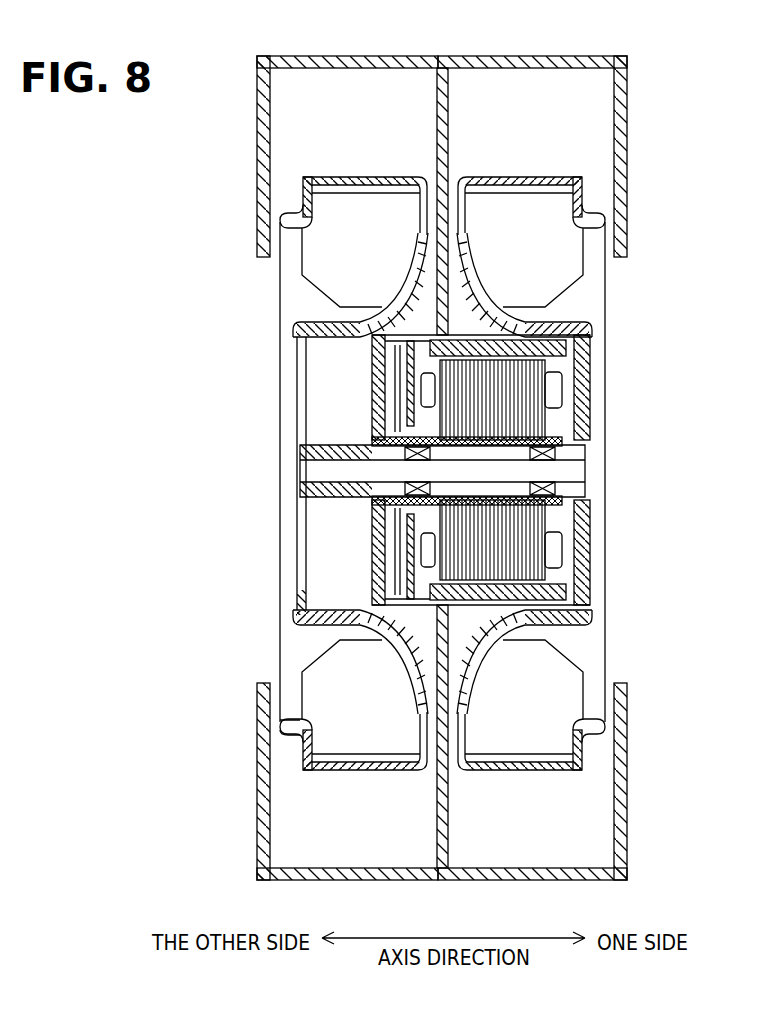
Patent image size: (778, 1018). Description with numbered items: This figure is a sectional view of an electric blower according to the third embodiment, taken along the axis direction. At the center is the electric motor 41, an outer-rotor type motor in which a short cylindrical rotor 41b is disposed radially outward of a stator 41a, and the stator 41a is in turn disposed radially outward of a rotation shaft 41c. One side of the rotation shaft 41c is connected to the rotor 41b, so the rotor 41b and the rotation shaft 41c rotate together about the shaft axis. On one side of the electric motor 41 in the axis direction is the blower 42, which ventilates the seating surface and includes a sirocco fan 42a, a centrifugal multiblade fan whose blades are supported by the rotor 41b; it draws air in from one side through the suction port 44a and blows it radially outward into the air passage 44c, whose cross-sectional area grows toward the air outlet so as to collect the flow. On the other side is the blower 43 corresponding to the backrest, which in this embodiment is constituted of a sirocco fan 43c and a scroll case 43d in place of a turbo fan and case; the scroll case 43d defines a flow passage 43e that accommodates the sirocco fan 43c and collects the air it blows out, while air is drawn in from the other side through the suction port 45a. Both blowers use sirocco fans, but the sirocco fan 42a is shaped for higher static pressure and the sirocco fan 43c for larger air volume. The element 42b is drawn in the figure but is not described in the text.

The electric motor 41 is at (527, 470).
The stator 41a is at (525, 528).
The rotor 41b is at (580, 582).
The rotation shaft 41c is at (503, 471).
The blower 42 is at (606, 528).
The sirocco fan 42a is at (545, 700).
The side plate of second impeller 42b is at (620, 737).
The blower 43 is at (274, 473).
The sirocco fan 43c is at (298, 616).
The scroll case 43d is at (258, 722).
The flow passage 43e is at (338, 107).
The suction port 44a is at (592, 355).
The air passage 44c is at (517, 100).
The suction port 45a is at (280, 414).